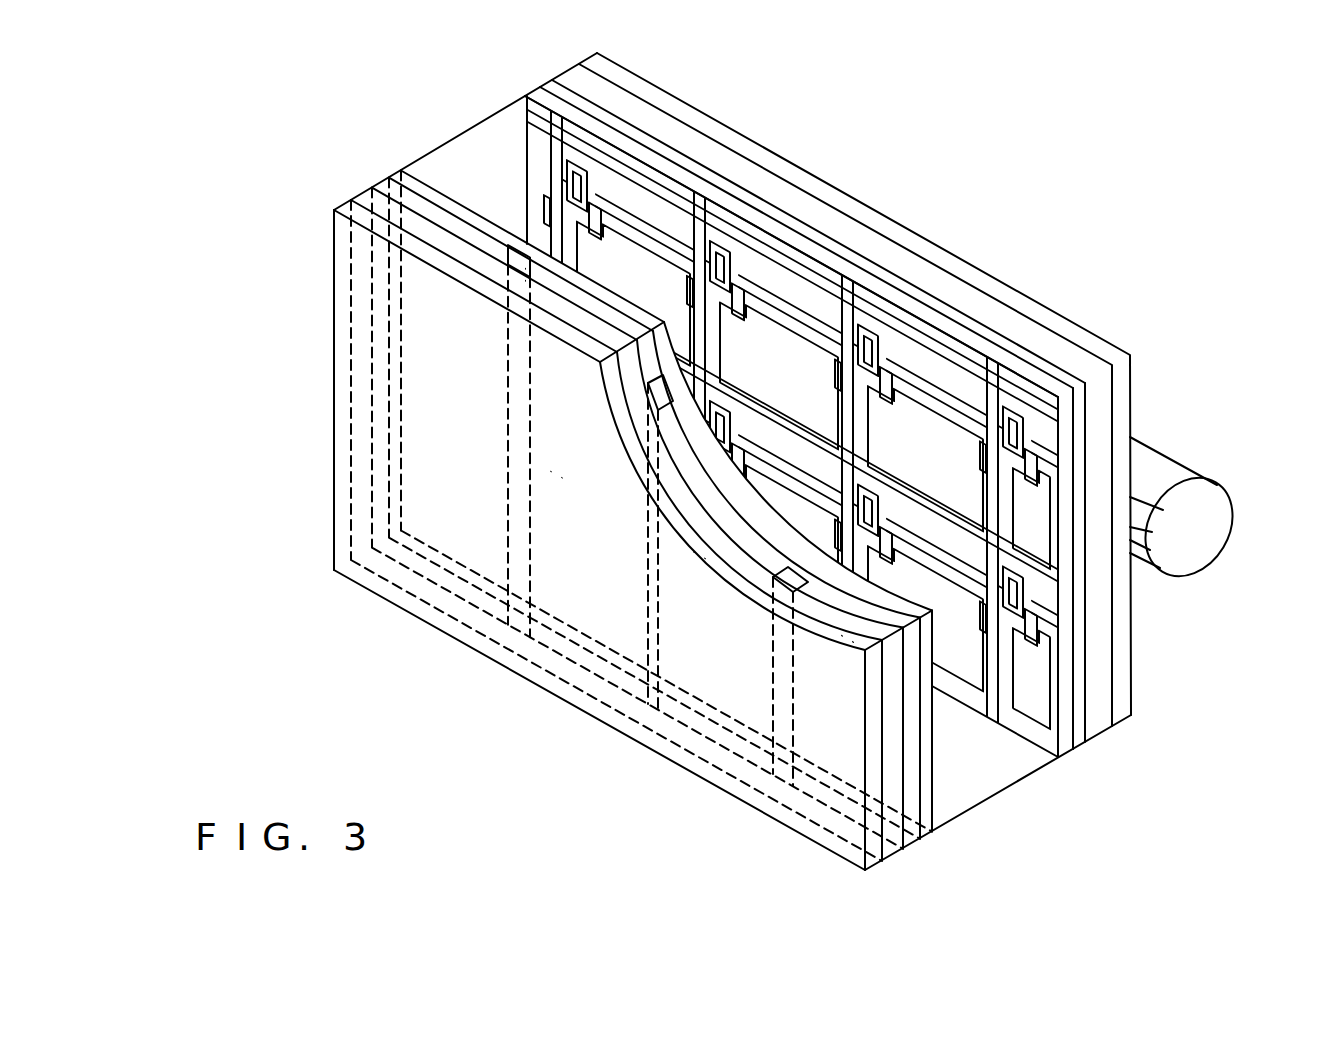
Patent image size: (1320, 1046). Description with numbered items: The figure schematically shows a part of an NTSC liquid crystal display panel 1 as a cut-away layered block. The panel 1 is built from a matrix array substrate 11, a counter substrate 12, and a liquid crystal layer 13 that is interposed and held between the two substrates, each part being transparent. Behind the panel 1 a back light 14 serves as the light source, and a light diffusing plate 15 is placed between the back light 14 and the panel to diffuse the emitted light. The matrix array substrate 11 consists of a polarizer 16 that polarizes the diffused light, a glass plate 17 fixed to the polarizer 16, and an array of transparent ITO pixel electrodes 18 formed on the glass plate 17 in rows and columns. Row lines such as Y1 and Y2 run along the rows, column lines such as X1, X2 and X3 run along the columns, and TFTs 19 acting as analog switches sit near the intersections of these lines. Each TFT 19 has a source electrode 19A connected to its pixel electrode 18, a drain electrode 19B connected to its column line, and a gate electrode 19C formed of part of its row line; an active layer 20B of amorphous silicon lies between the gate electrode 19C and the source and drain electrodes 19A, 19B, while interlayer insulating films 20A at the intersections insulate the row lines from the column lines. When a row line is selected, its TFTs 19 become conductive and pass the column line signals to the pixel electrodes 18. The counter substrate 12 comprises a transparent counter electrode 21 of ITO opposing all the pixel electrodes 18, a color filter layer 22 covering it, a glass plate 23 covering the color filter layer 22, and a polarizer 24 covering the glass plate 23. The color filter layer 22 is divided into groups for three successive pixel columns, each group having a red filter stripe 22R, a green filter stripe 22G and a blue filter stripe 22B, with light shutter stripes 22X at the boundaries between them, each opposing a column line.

The liquid crystal display panel 1 is at (708, 106).
The matrix array substrate 11 is at (594, 40).
The counter substrate 12 is at (397, 159).
The liquid crystal layer 13 is at (519, 85).
The back light 14 is at (1210, 497).
The light diffusing plate 15 is at (1118, 380).
The polarizer 16 is at (1083, 723).
The glass plate 17 is at (1067, 737).
The pixel electrodes 18 is at (963, 510).
The TFTs 19 is at (753, 270).
The source electrode 19A is at (887, 387).
The drain electrode 19B is at (870, 323).
The gate electrode 19C is at (913, 367).
The interlayer insulating films 20A is at (830, 332).
The active layers 20B is at (913, 340).
The polarizer 21 is at (932, 810).
The color filter layer 22 is at (910, 830).
The light shutter stripes 22X is at (370, 573).
The red filter stripe 22R is at (425, 597).
The green filter stripe 22G is at (587, 667).
The blue filter stripe 22B is at (720, 737).
The glass plate 23 is at (890, 847).
The polarizer 24 is at (334, 452).
The column line X1 is at (553, 135).
The column line X2 is at (700, 200).
The column line X3 is at (847, 287).
The row line Y1 is at (1050, 458).
The row line Y2 is at (1046, 620).